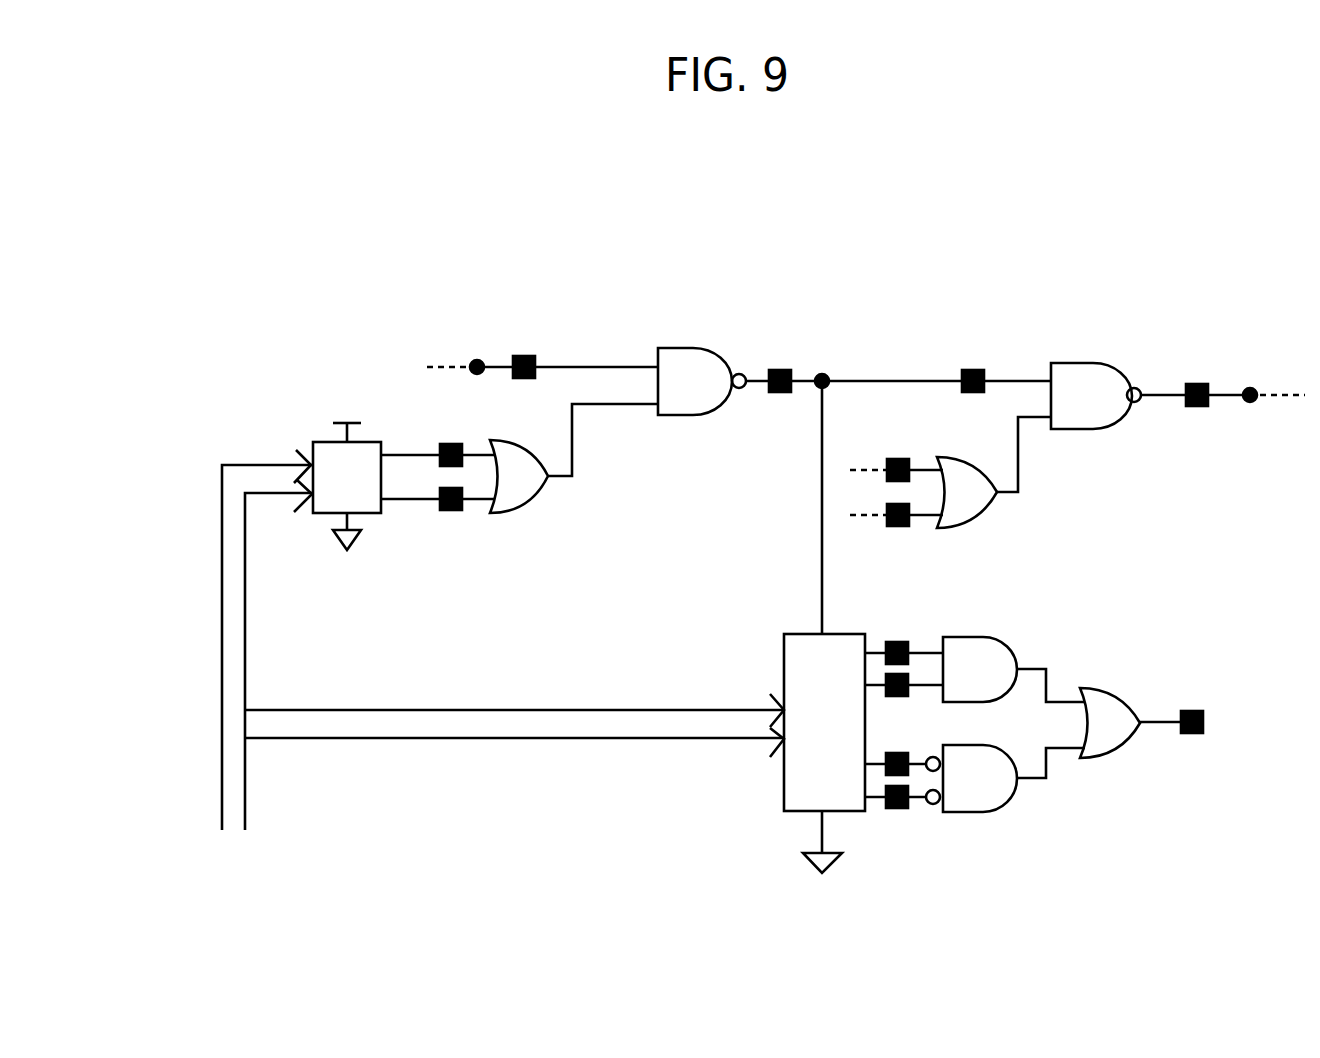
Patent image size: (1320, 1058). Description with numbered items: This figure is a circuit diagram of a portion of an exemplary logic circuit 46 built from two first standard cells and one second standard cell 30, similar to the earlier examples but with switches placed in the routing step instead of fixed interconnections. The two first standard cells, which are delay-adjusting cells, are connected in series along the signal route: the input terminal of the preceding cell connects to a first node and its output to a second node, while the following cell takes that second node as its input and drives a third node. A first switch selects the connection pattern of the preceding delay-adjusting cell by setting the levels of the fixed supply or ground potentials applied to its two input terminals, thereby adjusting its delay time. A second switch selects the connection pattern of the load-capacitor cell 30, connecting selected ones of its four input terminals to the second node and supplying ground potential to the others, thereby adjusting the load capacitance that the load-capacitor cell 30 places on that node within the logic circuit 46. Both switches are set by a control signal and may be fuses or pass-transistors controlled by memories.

The logic circuit 46 is at (1174, 224).
The second standard cell 30 is at (1064, 803).